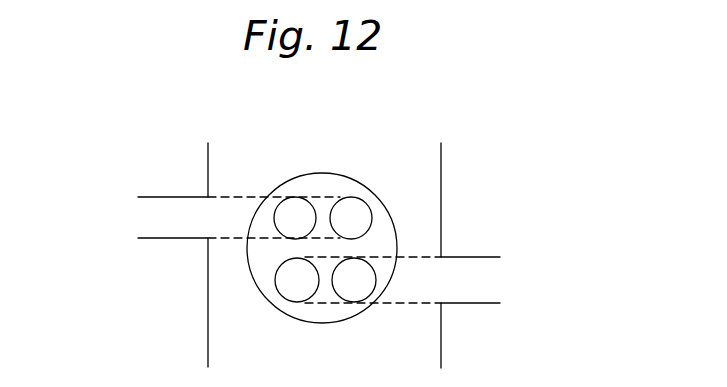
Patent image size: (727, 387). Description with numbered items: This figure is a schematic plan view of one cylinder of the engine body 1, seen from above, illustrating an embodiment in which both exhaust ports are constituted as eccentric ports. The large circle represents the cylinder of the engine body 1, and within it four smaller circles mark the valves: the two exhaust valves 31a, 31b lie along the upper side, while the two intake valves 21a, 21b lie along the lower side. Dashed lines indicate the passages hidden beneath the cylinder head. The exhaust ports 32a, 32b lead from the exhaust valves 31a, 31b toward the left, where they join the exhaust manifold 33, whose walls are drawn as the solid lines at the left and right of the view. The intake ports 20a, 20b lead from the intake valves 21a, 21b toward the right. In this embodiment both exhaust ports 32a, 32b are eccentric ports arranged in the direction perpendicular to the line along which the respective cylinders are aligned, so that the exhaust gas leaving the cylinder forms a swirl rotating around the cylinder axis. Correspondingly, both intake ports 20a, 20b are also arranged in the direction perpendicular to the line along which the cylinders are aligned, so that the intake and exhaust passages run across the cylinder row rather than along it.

The engine body 1 is at (351, 166).
The intake port 20a is at (322, 303).
The intake port 20b is at (412, 303).
The intake valve 21a is at (295, 301).
The intake valve 21b is at (355, 302).
The exhaust valve 31a is at (363, 212).
The exhaust valve 31b is at (292, 197).
The exhaust port 32a is at (331, 204).
The exhaust port 32b is at (276, 205).
The exhaust manifold 33 is at (183, 239).